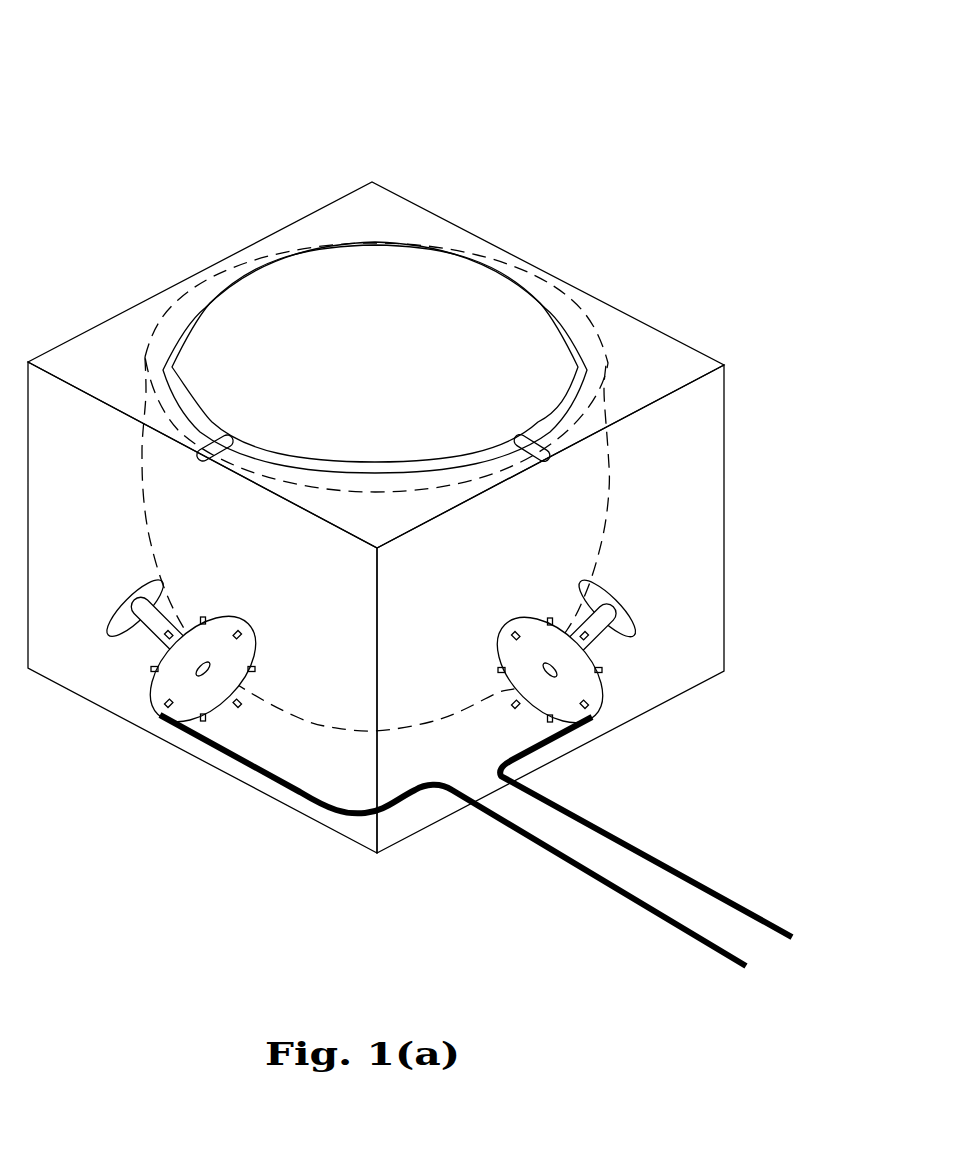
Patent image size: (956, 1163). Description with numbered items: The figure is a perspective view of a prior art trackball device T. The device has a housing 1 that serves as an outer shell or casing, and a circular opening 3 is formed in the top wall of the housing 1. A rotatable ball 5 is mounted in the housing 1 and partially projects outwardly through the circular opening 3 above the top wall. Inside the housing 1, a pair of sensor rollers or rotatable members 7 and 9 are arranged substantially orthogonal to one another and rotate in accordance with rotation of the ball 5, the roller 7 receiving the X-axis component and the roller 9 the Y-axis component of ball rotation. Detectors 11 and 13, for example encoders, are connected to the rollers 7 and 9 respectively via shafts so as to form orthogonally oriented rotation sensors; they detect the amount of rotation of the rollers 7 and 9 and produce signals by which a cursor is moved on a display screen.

The trackball device T is at (172, 163).
The housing 1 is at (657, 459).
The circular opening 3 is at (560, 322).
The rotatable ball 5 is at (343, 290).
The sensor roller 7 is at (632, 620).
The sensor roller 9 is at (130, 628).
The detector 11 is at (545, 714).
The detector 13 is at (213, 698).